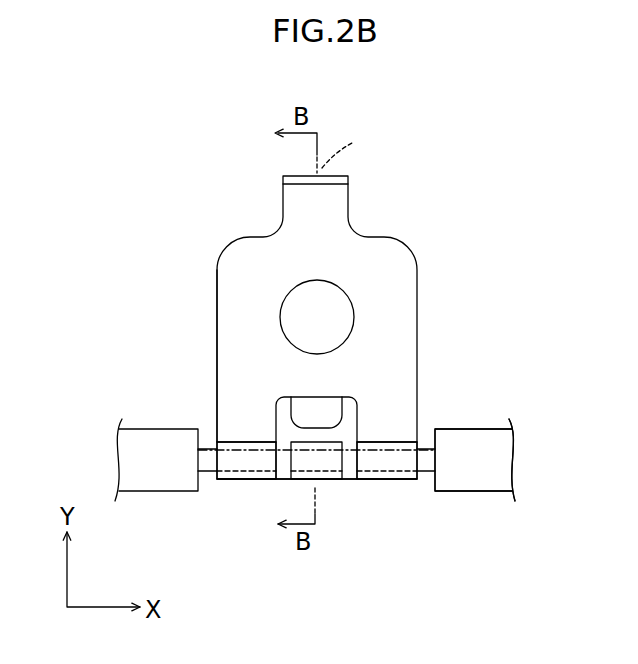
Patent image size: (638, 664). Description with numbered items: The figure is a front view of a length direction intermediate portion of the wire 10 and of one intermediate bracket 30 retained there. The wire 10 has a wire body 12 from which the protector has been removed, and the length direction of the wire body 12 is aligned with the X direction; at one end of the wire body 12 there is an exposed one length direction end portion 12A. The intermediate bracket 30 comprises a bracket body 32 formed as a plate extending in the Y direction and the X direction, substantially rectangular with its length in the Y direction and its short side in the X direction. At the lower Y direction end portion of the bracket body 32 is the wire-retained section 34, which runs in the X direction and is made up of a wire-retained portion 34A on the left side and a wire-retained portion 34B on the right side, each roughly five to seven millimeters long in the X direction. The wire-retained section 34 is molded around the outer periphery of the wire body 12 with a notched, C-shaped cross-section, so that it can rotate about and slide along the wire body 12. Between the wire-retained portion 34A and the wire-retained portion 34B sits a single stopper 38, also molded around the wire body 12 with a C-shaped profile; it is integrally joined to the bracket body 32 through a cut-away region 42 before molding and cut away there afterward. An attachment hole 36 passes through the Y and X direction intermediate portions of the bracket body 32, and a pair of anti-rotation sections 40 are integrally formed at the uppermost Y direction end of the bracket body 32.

The wire 10 is at (483, 428).
The wire body 12 is at (206, 462).
The one length direction end portion 12A is at (425, 462).
The intermediate bracket 30 is at (407, 238).
The bracket body 32 is at (233, 284).
The wire-retained section 34 is at (373, 440).
The wire-retained portion 34A is at (243, 481).
The wire-retained portion 34B is at (377, 481).
The attachment hole 36 is at (333, 329).
The stopper 38 is at (327, 477).
The anti-rotation section 40 is at (338, 176).
The cut-away region 42 is at (318, 426).